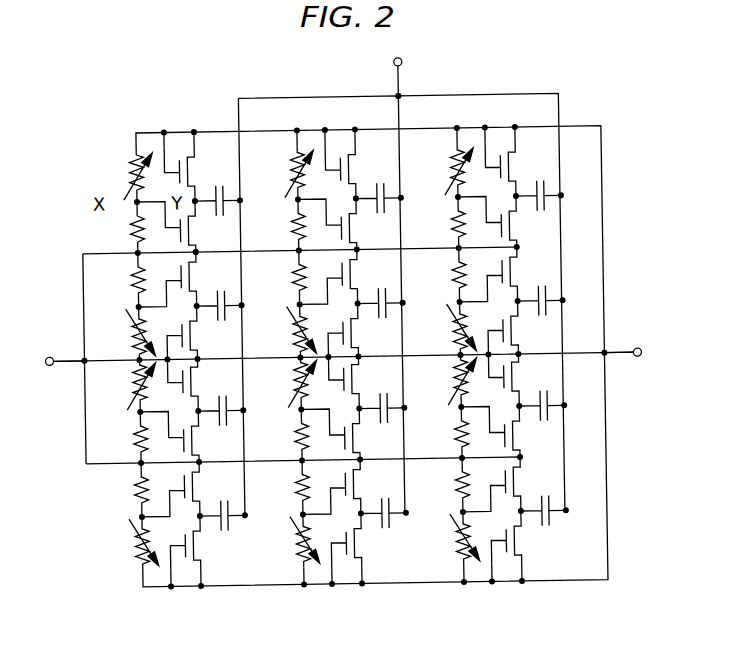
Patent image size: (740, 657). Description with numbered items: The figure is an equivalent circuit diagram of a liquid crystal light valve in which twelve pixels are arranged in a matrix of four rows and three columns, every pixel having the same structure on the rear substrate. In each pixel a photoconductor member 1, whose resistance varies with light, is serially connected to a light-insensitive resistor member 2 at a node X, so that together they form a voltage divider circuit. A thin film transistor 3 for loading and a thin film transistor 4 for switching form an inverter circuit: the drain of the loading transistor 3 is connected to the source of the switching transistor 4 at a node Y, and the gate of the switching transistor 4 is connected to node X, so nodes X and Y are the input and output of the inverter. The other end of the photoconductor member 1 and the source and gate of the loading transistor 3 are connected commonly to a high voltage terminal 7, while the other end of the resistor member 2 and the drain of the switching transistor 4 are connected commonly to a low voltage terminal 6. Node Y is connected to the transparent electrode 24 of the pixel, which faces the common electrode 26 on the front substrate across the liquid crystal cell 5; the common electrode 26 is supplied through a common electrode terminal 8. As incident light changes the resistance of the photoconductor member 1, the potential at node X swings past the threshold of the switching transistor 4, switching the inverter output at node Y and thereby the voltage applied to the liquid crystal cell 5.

The photoconductor member 1 is at (123, 177).
The resistor member 2 is at (119, 229).
The thin film transistor for loading 3 is at (187, 175).
The thin film transistor for switching 4 is at (166, 228).
The liquid crystal cell 5 is at (219, 199).
The transparent electrode 24 is at (210, 216).
The common electrode 26 is at (233, 215).
The low voltage terminal 6 is at (47, 356).
The high voltage terminal 7 is at (639, 357).
The common electrode terminal 8 is at (404, 66).